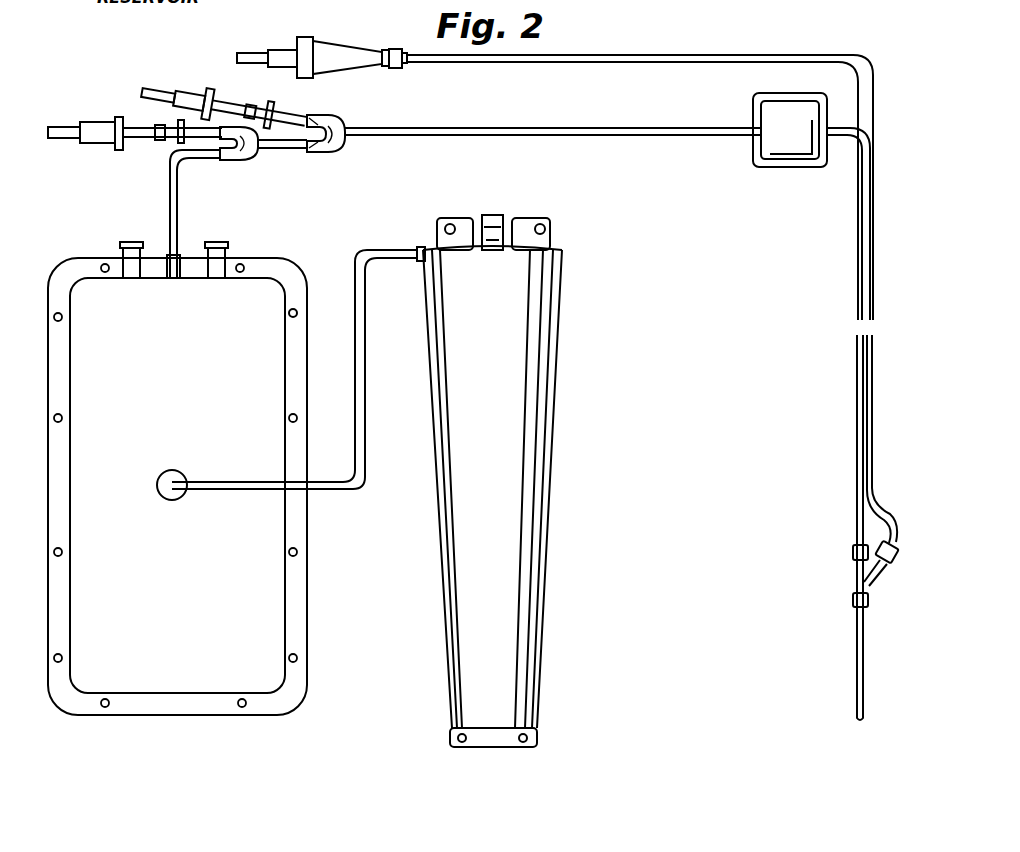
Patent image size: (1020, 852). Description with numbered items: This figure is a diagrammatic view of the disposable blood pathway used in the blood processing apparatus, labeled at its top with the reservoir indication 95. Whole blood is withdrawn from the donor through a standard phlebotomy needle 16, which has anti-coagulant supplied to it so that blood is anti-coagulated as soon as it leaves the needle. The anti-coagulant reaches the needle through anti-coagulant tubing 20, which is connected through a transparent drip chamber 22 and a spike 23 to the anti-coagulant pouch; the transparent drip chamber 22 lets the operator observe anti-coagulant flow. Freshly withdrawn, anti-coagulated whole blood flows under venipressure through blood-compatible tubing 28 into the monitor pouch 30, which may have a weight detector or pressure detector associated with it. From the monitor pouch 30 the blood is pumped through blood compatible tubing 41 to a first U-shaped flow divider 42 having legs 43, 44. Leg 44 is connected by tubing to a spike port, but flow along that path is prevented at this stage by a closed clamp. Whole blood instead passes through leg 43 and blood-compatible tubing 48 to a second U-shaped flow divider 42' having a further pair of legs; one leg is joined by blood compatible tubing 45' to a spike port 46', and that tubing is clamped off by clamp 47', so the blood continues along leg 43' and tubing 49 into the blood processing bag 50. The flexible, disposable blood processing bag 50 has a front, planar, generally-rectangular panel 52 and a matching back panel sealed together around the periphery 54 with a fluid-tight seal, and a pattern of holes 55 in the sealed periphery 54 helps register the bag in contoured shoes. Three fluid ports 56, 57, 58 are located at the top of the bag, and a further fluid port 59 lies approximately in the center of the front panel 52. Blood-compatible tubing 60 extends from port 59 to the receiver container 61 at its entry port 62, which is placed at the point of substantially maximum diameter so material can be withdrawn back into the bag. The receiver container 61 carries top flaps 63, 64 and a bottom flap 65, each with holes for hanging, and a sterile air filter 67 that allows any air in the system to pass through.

The phlebotomy needle 16 is at (867, 612).
The anti-coagulant tubing 20 is at (872, 500).
The transparent drip chamber 22 is at (340, 52).
The spike 23 is at (280, 52).
The blood-compatible tubing 28 is at (855, 519).
The monitor pouch 30 is at (800, 168).
The blood compatible tubing 41 is at (690, 135).
The first U-shaped flow divider 42 is at (552, 118).
The second U-shaped flow divider 42' is at (282, 157).
The leg 43 is at (336, 138).
The leg 43' is at (241, 157).
The leg 44 is at (333, 108).
The blood compatible tubing 45' is at (156, 147).
The spike port 46' is at (135, 141).
The clamp 47' is at (157, 123).
The blood-compatible tubing 48 is at (304, 150).
The tubing 49 is at (180, 195).
The blood processing bag 50 is at (205, 465).
The front panel 52 is at (176, 553).
The periphery 54 is at (303, 378).
The holes 55 is at (298, 313).
The fluid port 56 is at (122, 250).
The fluid port 57 is at (178, 262).
The fluid port 58 is at (228, 250).
The fluid port 59 is at (166, 470).
The blood-compatible tubing 60 is at (366, 452).
The receiver container 61 is at (498, 475).
The entry port 62 is at (425, 248).
The top flap 63 is at (460, 218).
The top flap 64 is at (538, 218).
The bottom flap 65 is at (494, 740).
The sterile air filter 67 is at (492, 215).
The reservoir label 95 is at (140, 17).